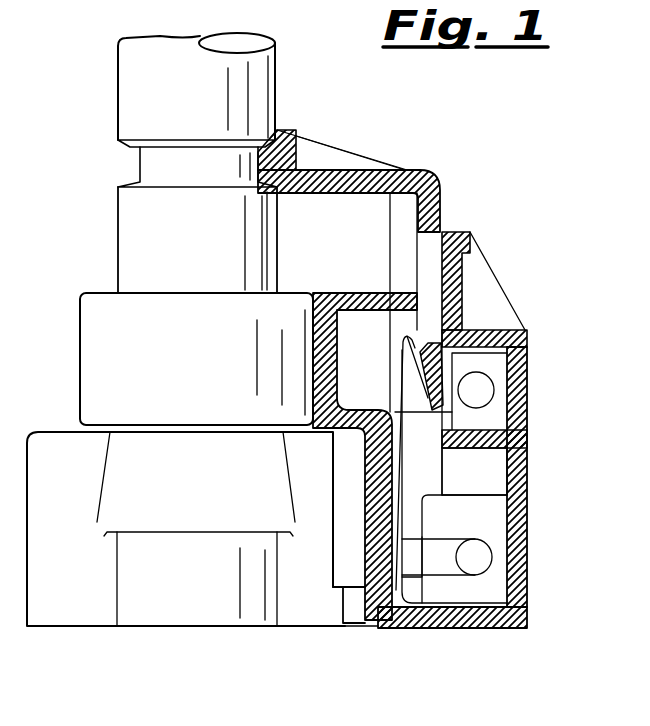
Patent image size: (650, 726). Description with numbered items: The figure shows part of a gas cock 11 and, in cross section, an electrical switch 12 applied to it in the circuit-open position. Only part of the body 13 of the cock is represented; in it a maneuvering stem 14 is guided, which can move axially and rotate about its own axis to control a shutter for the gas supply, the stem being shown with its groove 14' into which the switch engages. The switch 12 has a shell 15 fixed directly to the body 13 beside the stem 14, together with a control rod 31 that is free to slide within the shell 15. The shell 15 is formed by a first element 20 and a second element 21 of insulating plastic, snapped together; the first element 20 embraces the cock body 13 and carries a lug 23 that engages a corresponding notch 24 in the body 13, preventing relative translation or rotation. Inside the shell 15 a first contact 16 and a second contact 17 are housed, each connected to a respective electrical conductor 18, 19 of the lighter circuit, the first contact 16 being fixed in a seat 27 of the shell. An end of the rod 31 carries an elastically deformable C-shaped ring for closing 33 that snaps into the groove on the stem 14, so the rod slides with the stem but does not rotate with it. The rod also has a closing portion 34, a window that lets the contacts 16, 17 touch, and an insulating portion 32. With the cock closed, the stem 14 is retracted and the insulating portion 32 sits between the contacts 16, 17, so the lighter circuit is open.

The gas cock 11 is at (62, 356).
The electrical switch 12 is at (550, 389).
The body 13 is at (76, 626).
The maneuvering stem 14 is at (167, 90).
The nozzle neck groove 14' is at (162, 167).
The shell 15 is at (508, 638).
The first contact 16 is at (455, 630).
The second contact 17 is at (527, 352).
The electrical conductor 18 is at (482, 560).
The electrical conductor 19 is at (485, 400).
The first element 20 is at (340, 538).
The second element 21 is at (527, 580).
The lug 23 is at (360, 616).
The notch 24 is at (337, 627).
The seat 27 is at (497, 482).
The control rod 31 is at (405, 168).
The insulating portion 32 is at (455, 325).
The C-shaped ring for closing 33 is at (300, 133).
The closing portion 34 is at (470, 232).